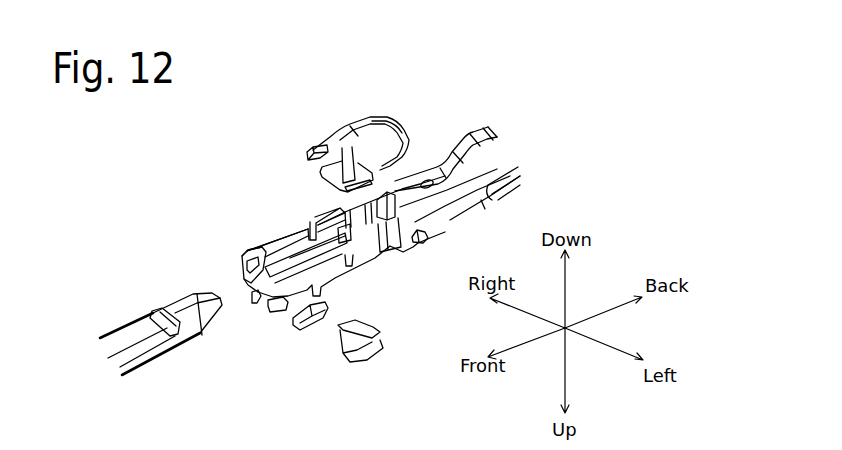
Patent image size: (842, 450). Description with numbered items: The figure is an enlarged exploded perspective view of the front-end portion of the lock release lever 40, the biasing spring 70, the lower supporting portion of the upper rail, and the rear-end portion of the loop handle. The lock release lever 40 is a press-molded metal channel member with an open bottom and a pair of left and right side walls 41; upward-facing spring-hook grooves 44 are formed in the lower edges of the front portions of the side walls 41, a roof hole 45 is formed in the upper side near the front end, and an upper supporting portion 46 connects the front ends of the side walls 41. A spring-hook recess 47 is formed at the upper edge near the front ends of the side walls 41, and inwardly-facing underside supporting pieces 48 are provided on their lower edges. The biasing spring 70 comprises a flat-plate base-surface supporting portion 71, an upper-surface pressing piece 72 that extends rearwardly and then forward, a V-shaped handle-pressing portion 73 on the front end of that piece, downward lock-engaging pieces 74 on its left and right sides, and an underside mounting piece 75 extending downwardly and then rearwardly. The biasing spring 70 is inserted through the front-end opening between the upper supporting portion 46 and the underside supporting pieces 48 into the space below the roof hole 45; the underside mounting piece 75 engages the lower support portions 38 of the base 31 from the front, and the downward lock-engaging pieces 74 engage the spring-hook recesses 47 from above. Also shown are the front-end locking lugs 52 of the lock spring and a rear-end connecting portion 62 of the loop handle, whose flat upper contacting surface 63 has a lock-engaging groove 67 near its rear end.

The base 31 is at (368, 360).
The lower support portions 38 is at (340, 332).
The lock release lever 40 is at (480, 145).
The side walls 41 is at (513, 180).
The spring-hook grooves 44 is at (417, 244).
The roof hole 45 is at (290, 245).
The upper supporting portion 46 is at (258, 253).
The spring-hook recess 47 is at (310, 222).
The underside supporting pieces 48 is at (277, 309).
The front-end locking lugs 52 is at (427, 242).
The rear-end connecting portions 62 is at (143, 355).
The upper contacting surface 63 is at (117, 335).
The lock-engaging groove 67 is at (152, 311).
The biasing spring 70 is at (419, 110).
The base-surface supporting portion 71 is at (366, 152).
The upper-surface pressing piece 72 is at (345, 137).
The handle-pressing portion 73 is at (320, 170).
The downward lock-engaging pieces 74 is at (318, 145).
The underside mounting piece 75 is at (432, 208).